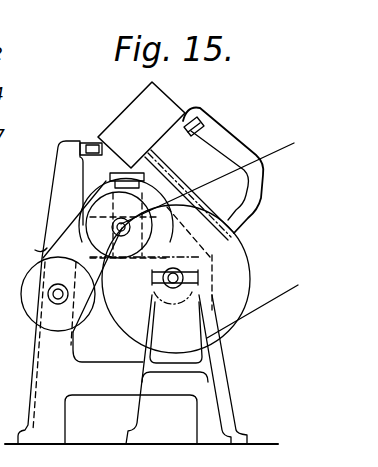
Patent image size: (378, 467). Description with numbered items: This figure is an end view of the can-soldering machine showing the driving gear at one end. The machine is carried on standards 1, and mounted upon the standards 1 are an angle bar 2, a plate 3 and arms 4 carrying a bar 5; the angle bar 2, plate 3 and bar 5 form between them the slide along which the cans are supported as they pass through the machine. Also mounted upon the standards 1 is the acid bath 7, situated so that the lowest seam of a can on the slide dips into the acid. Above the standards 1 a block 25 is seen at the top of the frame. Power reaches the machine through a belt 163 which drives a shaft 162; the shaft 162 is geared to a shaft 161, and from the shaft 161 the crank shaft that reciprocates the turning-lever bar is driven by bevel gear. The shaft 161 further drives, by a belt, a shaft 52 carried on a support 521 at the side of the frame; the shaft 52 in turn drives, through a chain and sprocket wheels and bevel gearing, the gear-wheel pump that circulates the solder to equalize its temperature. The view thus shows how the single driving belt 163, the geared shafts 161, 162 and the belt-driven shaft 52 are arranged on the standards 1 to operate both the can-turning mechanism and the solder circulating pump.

The standards 1 is at (58, 177).
The angle bar 2 is at (96, 155).
The plate 3 is at (180, 193).
The arms 4 is at (230, 144).
The bar 5 is at (198, 130).
The acid bath 7 is at (97, 192).
The block 25 is at (141, 125).
The shaft 52 is at (48, 296).
The shaft 161 is at (128, 231).
The shaft 162 is at (183, 279).
The belt 163 is at (283, 152).
The pulley support arm 521 is at (65, 256).